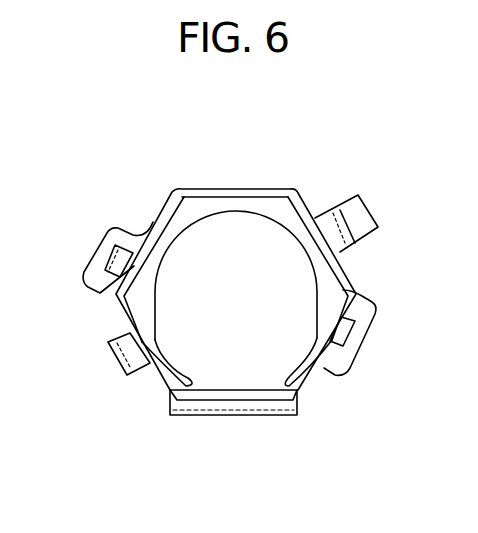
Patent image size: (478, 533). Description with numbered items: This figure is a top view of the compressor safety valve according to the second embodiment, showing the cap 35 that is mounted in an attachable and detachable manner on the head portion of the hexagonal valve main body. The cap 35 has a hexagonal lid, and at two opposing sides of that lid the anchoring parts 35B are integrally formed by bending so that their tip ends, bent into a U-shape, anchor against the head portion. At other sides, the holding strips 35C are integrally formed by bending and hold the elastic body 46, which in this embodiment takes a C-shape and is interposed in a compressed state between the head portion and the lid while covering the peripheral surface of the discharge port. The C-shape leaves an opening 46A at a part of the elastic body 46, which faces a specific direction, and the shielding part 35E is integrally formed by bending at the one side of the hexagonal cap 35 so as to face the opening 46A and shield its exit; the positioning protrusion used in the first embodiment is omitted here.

The cap 35 is at (171, 178).
The elastic body 46 is at (285, 213).
The opening 46A is at (249, 372).
The anchoring parts 35B is at (112, 357).
The holding strips 35C is at (330, 338).
The shielding part 35E is at (203, 417).